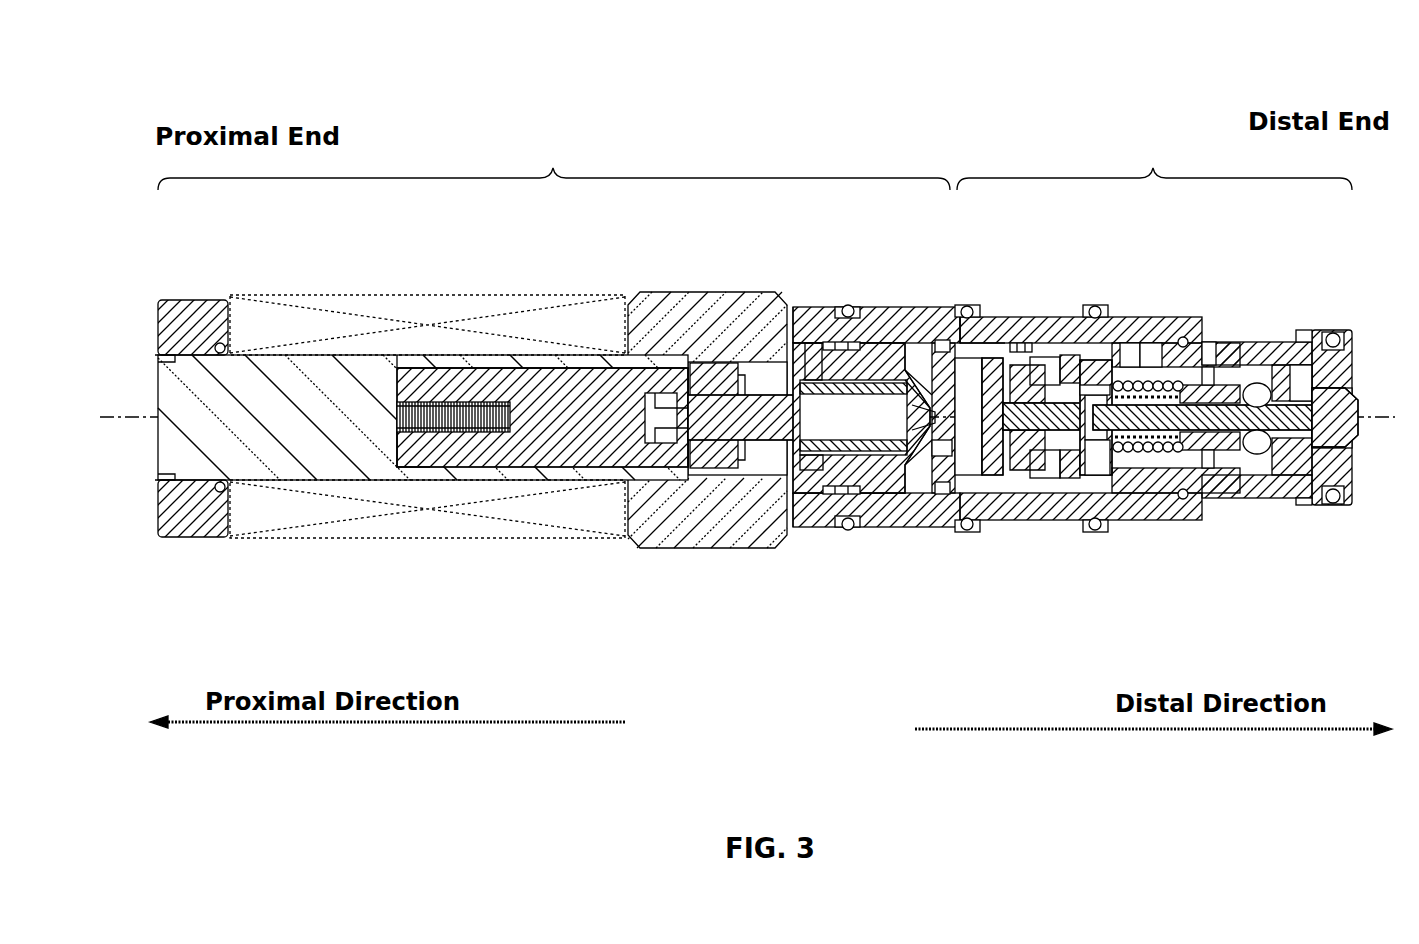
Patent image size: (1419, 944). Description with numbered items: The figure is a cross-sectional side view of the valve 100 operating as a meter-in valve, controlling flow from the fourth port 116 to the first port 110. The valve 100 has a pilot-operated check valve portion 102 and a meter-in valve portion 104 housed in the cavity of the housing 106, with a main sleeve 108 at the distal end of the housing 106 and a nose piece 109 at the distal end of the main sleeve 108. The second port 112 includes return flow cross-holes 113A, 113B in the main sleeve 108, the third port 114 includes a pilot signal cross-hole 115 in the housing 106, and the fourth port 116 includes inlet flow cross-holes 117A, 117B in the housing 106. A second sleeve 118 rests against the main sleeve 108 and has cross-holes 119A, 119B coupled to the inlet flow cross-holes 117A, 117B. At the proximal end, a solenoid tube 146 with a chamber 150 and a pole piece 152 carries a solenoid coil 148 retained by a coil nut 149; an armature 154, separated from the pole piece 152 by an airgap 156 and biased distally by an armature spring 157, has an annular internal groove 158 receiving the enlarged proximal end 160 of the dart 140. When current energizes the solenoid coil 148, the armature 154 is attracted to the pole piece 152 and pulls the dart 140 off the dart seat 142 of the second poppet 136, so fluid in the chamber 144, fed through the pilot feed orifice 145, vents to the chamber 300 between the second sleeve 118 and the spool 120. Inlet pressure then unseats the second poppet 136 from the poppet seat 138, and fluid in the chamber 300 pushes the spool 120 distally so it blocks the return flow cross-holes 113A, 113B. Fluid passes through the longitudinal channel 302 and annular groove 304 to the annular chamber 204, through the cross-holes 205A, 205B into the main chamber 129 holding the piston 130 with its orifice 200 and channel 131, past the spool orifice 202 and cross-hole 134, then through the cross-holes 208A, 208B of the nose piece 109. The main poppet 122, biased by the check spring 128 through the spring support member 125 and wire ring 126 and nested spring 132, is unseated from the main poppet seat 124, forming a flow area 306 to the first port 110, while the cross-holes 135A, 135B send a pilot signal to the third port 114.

The valve 100 is at (472, 152).
The pilot-operated check valve portion 102 is at (1153, 160).
The meter-in valve portion 104 is at (553, 165).
The housing 106 is at (740, 300).
The main sleeve 108 is at (1304, 385).
The nose piece 109 is at (1345, 330).
The first port 110 is at (1358, 440).
The second port 112 is at (1303, 500).
The return flow cross-hole 113A is at (1235, 342).
The return flow cross-hole 113B is at (1225, 498).
The third port 114 is at (1032, 312).
The pilot signal cross-hole 115 is at (990, 317).
The fourth port 116 is at (895, 315).
The inlet flow cross-hole 117A is at (903, 380).
The inlet flow cross-hole 117B is at (902, 447).
The second sleeve 118 is at (797, 330).
The cross-hole 119A is at (884, 378).
The cross-hole 119B is at (918, 433).
The spool 120 is at (1207, 340).
The main poppet 122 is at (1352, 505).
The main poppet seat 124 is at (1306, 332).
The spring support member 125 is at (1090, 395).
The wire ring 126 is at (1113, 478).
The check spring 128 is at (1170, 493).
The main chamber 129 is at (1205, 468).
The piston 130 is at (1097, 477).
The channel 131 is at (1004, 458).
The spring 132 is at (1128, 343).
The cross-hole 134 is at (1045, 330).
The cross-hole 135A is at (938, 342).
The cross-hole 135B is at (943, 495).
The second poppet 136 is at (826, 450).
The poppet seat 138 is at (938, 457).
The dart 140 is at (767, 430).
The dart seat 142 is at (877, 495).
The chamber 144 is at (878, 440).
The pilot feed orifice 145 is at (813, 345).
The solenoid tube 146 is at (510, 360).
The solenoid coil 148 is at (270, 295).
The coil nut 149 is at (188, 300).
The chamber 150 is at (697, 372).
The pole piece 152 is at (370, 370).
The armature 154 is at (563, 378).
The airgap 156 is at (408, 467).
The armature spring 157 is at (403, 368).
The annular internal groove 158 is at (656, 395).
The enlarged proximal end 160 is at (668, 442).
The orifice 200 is at (1072, 360).
The orifice 202 is at (1052, 343).
The annular chamber 204 is at (1152, 355).
The cross-hole 205A is at (1158, 380).
The cross-hole 205B is at (1142, 455).
The cross-hole 208A is at (1257, 383).
The cross-hole 208B is at (1257, 455).
The chamber 300 is at (970, 472).
The longitudinal channel 302 is at (1066, 433).
The annular groove 304 is at (1046, 474).
The flow area 306 is at (1312, 440).